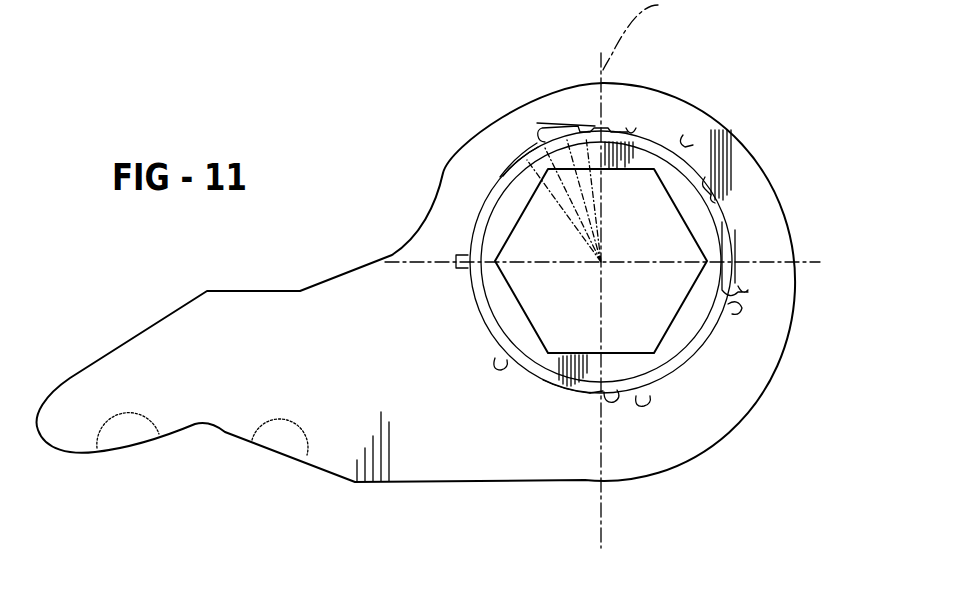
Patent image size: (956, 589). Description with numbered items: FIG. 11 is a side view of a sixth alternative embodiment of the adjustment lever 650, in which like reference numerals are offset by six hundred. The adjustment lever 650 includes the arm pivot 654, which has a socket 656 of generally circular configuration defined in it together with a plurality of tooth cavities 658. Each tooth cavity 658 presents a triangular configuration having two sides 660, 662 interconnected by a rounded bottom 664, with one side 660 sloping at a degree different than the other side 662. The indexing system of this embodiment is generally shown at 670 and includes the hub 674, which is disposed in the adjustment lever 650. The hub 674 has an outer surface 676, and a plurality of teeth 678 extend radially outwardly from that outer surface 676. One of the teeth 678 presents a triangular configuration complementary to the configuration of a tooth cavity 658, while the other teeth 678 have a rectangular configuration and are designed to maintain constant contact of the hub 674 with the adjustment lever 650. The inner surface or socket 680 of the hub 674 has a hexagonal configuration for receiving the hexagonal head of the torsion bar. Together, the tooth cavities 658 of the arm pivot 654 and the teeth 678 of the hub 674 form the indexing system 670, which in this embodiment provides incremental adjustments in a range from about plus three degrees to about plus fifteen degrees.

The adjustment lever 650 is at (345, 147).
The arm pivot 654 is at (732, 168).
The socket 656 is at (633, 128).
The tooth cavities 658 is at (580, 128).
The side 660 is at (540, 139).
The side 662 is at (552, 124).
The rounded bottom 664 is at (538, 128).
The indexing system 670 is at (786, 191).
The hub 674 is at (675, 342).
The outer surface 676 is at (552, 387).
The teeth 678 is at (490, 356).
The inner surface or socket 680 is at (528, 316).